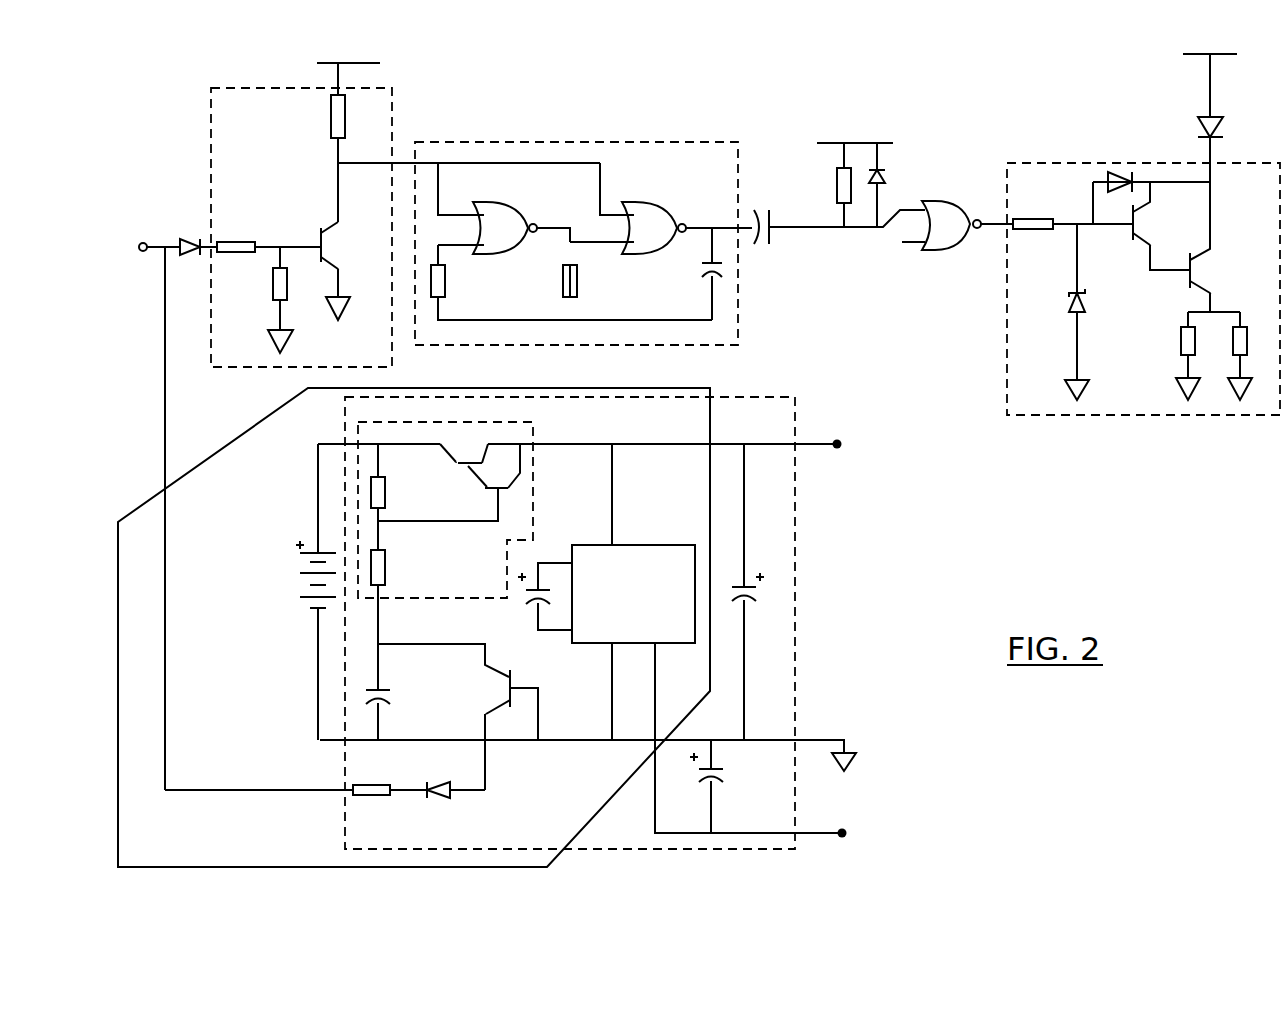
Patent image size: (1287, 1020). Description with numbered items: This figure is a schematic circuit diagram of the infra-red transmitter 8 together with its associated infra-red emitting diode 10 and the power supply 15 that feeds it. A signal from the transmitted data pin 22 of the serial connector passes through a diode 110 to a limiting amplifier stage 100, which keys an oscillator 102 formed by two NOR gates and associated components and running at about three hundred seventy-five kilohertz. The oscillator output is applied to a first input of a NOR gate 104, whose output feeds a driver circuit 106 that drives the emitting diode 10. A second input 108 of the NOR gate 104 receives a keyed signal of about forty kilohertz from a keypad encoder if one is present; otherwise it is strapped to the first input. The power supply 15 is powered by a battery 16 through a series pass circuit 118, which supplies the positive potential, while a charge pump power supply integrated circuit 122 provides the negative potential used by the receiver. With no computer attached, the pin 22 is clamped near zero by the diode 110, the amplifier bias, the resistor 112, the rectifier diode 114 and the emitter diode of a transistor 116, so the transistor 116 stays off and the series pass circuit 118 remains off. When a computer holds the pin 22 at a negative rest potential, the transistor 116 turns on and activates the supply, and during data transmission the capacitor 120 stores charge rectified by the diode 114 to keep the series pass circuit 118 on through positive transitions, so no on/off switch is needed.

The infra-red transmitter 8 is at (385, 211).
The transmitted data pin 22 is at (143, 243).
The diode 110 is at (189, 240).
The limiting amplifier stage 100 is at (393, 125).
The oscillator 102 is at (657, 142).
The NOR gate 104 is at (948, 251).
The second input 108 is at (910, 243).
The driver circuit 106 is at (1100, 162).
The infra-red emitting diode 10 is at (1220, 115).
The power supply 15 is at (500, 611).
The battery 16 is at (294, 563).
The series pass circuit 118 is at (533, 433).
The charge pump power supply integrated circuit 122 is at (667, 545).
The capacitor 120 is at (388, 690).
The transistor 116 is at (515, 681).
The resistor 112 is at (368, 785).
The rectifier diode 114 is at (438, 785).